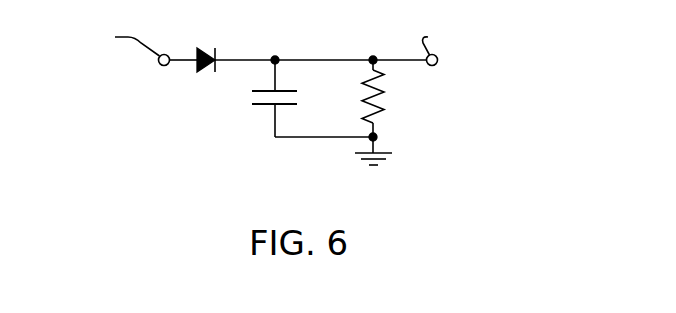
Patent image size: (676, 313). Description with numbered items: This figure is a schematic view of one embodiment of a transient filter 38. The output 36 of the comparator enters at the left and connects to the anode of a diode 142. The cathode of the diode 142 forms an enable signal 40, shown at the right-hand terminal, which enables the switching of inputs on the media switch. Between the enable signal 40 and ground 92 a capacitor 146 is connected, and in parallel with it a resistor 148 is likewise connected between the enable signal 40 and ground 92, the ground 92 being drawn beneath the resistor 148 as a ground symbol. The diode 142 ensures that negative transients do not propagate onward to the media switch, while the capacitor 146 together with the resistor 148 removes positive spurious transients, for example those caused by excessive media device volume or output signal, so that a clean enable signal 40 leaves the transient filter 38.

The output 36 is at (127, 47).
The diode 142 is at (212, 22).
The capacitor 146 is at (258, 90).
The resistor 148 is at (386, 100).
The ground 92 is at (378, 143).
The enable signal 40 is at (443, 46).
The transient filter 38 is at (535, 82).